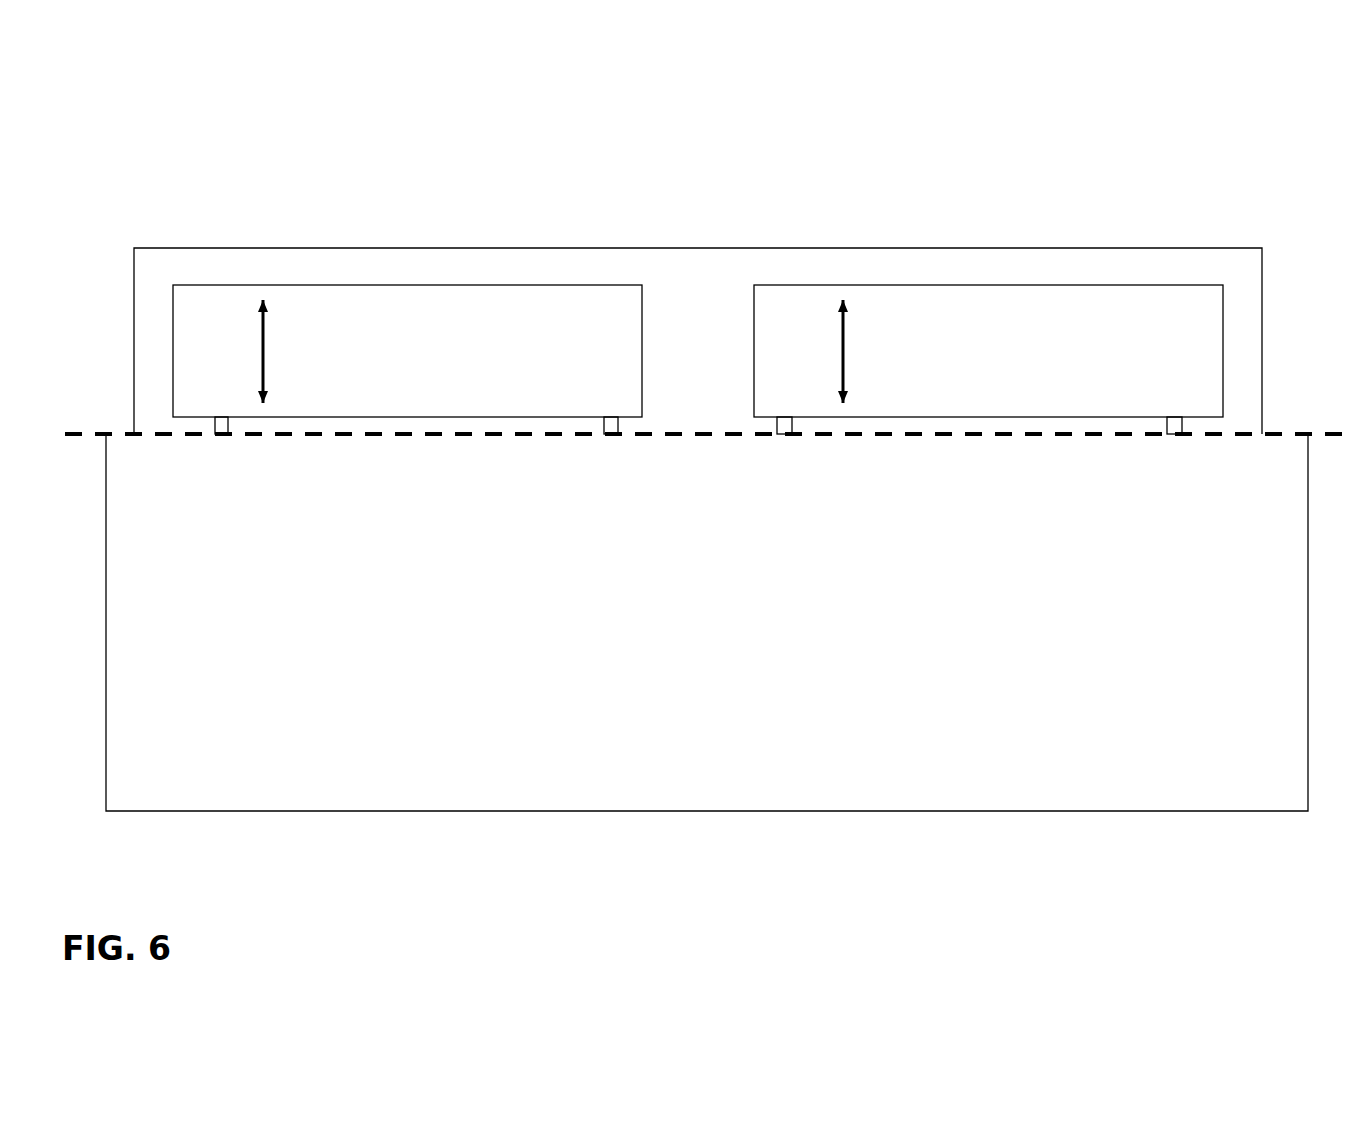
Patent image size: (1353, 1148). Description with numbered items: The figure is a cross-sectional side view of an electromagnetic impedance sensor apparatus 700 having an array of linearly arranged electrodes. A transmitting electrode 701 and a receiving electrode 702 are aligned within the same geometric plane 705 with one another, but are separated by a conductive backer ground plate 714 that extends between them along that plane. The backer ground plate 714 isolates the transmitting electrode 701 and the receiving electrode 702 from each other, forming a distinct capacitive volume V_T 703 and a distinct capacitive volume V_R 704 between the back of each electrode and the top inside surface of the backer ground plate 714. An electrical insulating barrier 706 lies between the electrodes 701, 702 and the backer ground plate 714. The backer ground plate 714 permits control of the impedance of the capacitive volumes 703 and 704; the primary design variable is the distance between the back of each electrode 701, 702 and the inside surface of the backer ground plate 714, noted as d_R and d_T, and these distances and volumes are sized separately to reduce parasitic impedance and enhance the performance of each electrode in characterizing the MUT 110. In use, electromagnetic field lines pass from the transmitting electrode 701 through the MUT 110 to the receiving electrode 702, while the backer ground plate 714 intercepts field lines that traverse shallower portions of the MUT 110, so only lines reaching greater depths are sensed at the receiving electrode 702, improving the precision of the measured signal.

The electromagnetic impedance sensor apparatus 700 is at (1073, 170).
The conductive backer ground plate 714 is at (298, 259).
The capacitive volume V_T 703 is at (452, 285).
The capacitive volume V_R 704 is at (977, 285).
The geometric plane 705 is at (79, 428).
The electrical insulating barrier 706 is at (223, 441).
The transmitting electrode 701 is at (426, 452).
The receiving electrode 702 is at (927, 440).
The MUT 110 is at (768, 631).